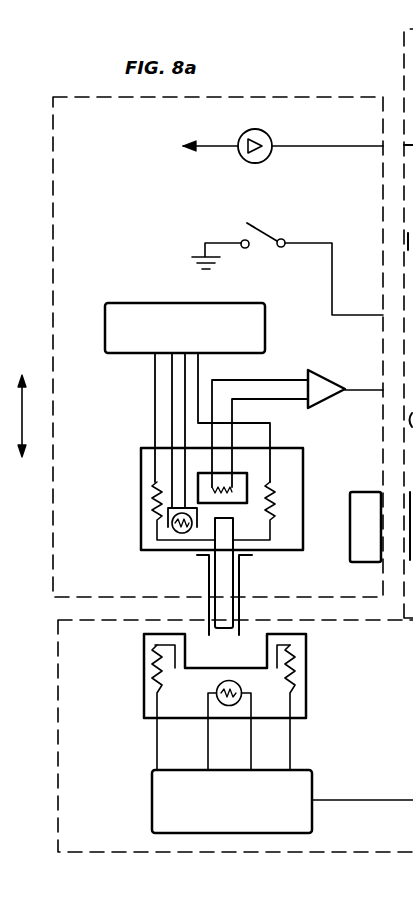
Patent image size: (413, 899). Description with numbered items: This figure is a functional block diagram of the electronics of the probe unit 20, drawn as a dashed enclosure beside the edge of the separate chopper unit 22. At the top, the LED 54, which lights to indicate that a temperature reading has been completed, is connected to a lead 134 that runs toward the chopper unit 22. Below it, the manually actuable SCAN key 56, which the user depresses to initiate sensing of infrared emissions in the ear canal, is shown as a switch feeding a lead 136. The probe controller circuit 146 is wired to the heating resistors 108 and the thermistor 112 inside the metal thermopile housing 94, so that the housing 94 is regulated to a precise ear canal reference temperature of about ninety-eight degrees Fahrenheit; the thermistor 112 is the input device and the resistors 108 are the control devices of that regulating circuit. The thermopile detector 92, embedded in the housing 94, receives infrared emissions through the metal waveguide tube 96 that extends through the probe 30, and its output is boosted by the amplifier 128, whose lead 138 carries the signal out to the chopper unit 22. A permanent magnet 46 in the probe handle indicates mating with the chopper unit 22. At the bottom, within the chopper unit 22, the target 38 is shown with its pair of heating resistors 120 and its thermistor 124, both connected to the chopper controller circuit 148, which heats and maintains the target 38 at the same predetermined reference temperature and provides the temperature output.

The probe unit 20 is at (53, 96).
The chopper unit 22 is at (398, 52).
The LED 54 is at (248, 134).
The lead 134 is at (312, 127).
The SCAN key 56 is at (270, 232).
The lead 136 is at (378, 313).
The probe controller circuit 146 is at (153, 302).
The amplifier 128 is at (328, 372).
The lead 138 is at (375, 394).
The thermopile housing 94 is at (141, 452).
The thermopile detector 92 is at (247, 473).
The resistors 108 is at (150, 497).
The thermistor 112 is at (172, 532).
The metal tube 96 is at (213, 535).
The probe 30 is at (243, 576).
The permanent magnet 46 is at (352, 560).
The target 38 is at (309, 636).
The heating resistors 120 is at (147, 684).
The thermistor 124 is at (241, 690).
The chopper controller circuit 148 is at (151, 784).